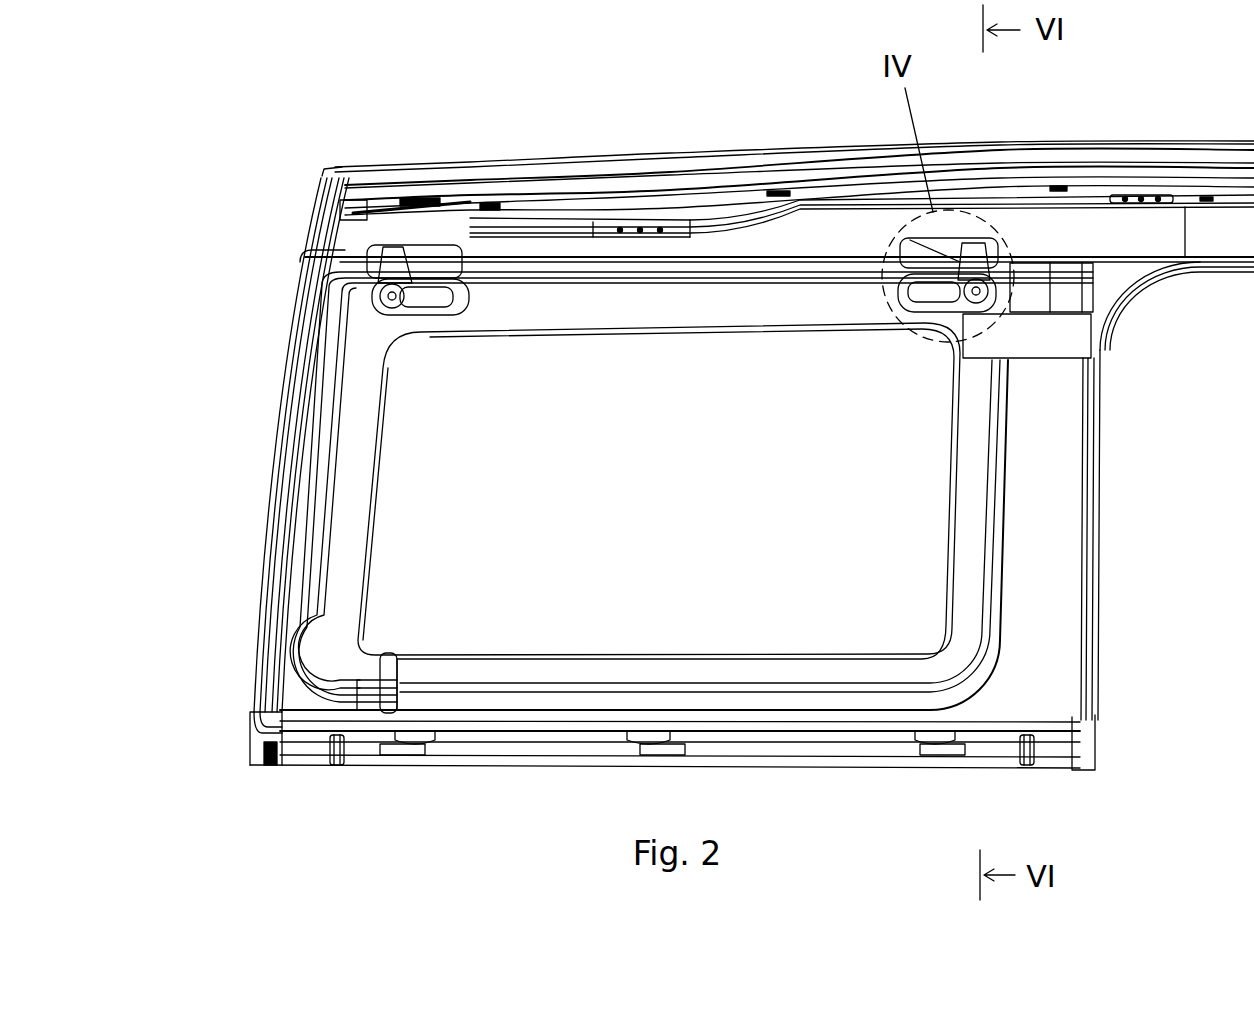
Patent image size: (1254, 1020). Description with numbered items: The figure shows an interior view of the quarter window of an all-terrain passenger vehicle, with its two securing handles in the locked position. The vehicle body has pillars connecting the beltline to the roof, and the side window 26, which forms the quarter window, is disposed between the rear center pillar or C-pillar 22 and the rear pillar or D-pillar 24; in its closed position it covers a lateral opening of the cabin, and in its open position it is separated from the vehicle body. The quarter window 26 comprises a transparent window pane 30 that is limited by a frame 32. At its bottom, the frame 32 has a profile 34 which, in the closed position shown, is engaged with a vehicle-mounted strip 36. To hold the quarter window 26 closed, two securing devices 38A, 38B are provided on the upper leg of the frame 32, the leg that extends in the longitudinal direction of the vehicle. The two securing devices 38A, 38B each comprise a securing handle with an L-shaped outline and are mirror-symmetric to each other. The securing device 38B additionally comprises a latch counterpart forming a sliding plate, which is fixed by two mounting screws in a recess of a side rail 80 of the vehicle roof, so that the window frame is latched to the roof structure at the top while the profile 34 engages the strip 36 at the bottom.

The pillar 22 is at (1095, 437).
The pillar 24 is at (292, 364).
The side window 26 is at (310, 461).
The window pane 30 is at (672, 498).
The frame 32 is at (330, 545).
The profile 34 is at (823, 720).
The vehicle-mounted strip 36 is at (487, 745).
The securing device 38A is at (390, 248).
The securing device 38B is at (993, 282).
The side rail 80 is at (745, 243).